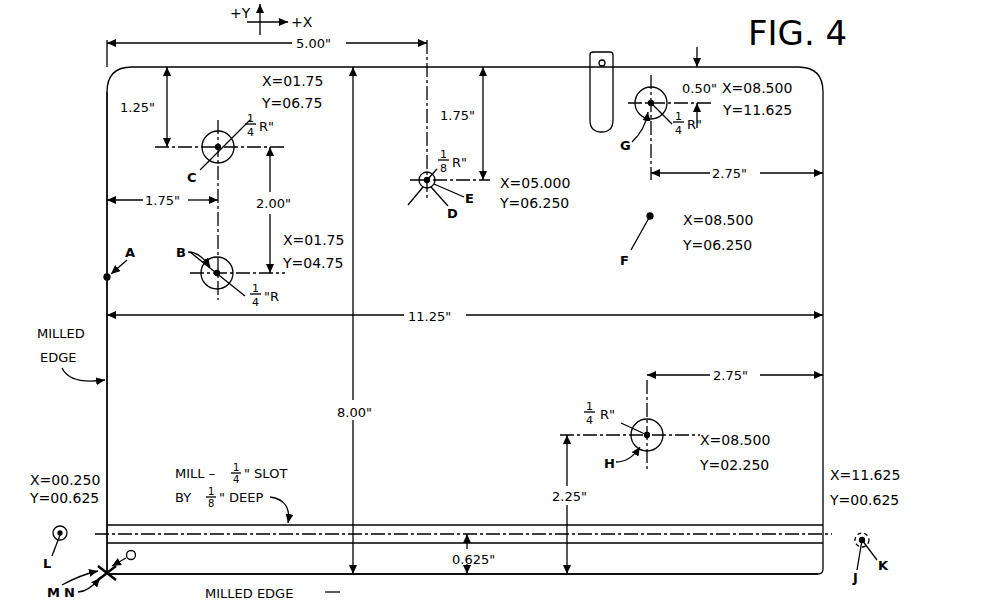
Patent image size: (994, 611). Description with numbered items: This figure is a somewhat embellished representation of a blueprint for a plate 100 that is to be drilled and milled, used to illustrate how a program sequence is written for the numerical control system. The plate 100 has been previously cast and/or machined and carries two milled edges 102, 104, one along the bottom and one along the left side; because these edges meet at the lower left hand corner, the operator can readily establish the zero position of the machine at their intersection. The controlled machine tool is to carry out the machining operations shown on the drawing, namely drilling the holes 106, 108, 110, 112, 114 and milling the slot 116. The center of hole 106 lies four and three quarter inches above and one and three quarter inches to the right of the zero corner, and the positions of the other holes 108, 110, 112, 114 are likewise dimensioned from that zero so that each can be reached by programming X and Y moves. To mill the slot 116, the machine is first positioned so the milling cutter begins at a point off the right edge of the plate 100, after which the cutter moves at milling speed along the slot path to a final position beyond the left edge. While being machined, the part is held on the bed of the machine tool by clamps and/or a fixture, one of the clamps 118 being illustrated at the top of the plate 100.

The plate 100 is at (548, 293).
The milled edge 102 is at (421, 574).
The milled edge 104 is at (107, 175).
The hole 106 is at (205, 285).
The hole 108 is at (215, 132).
The hole 110 is at (420, 188).
The hole 112 is at (645, 118).
The hole 114 is at (641, 423).
The slot 116 is at (395, 525).
The clamp 118 is at (590, 115).